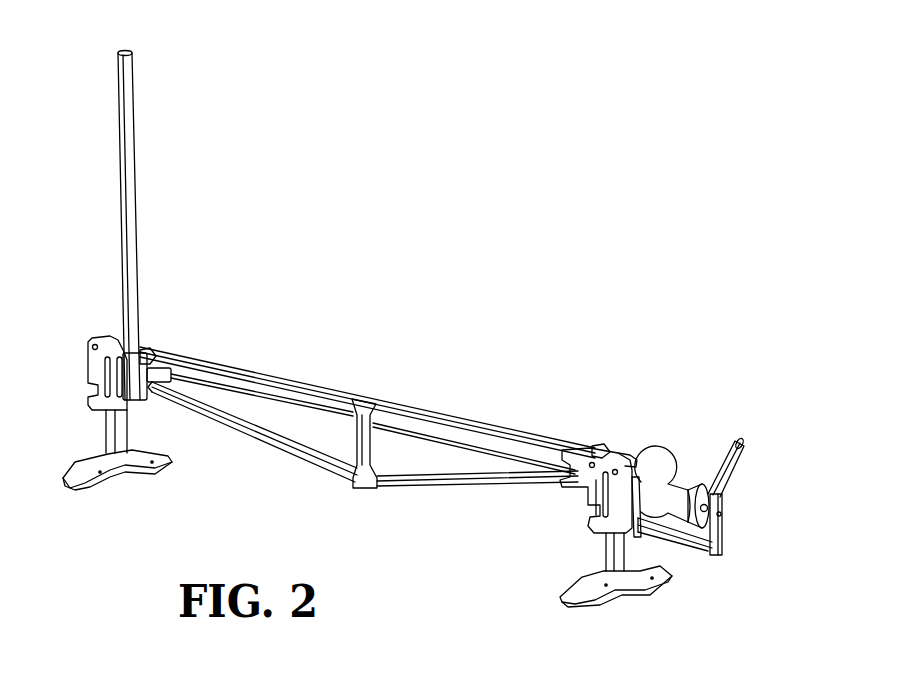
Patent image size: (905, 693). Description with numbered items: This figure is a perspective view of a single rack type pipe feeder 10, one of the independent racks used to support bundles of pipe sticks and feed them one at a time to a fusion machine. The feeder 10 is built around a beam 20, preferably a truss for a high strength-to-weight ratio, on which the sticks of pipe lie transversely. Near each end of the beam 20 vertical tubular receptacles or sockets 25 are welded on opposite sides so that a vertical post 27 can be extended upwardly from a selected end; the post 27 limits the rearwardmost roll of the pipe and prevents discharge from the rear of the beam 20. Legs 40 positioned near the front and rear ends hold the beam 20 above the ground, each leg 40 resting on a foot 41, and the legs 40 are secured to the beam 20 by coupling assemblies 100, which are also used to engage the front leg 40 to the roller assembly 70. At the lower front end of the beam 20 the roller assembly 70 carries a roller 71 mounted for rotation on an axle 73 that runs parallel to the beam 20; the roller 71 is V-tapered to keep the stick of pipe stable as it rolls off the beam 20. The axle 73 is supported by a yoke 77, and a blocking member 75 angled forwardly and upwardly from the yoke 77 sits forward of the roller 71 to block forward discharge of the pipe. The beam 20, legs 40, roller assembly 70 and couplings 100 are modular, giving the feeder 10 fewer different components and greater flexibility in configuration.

The rack type pipe feeder 10 is at (427, 336).
The beam 20 is at (367, 405).
The vertical tubular receptacle or socket 25 is at (388, 371).
The vertical post 27 is at (180, 226).
The leg 40 is at (365, 490).
The foot 41 is at (367, 528).
The roller assembly 70 is at (727, 470).
The roller 71 is at (675, 470).
The axle 73 is at (762, 525).
The blocking member 75 is at (765, 470).
The yoke 77 is at (704, 569).
The coupling assembly 100 is at (360, 402).